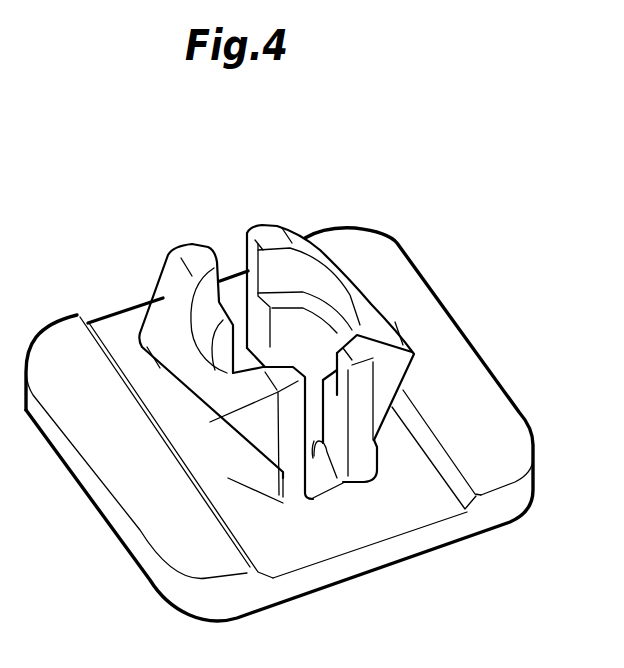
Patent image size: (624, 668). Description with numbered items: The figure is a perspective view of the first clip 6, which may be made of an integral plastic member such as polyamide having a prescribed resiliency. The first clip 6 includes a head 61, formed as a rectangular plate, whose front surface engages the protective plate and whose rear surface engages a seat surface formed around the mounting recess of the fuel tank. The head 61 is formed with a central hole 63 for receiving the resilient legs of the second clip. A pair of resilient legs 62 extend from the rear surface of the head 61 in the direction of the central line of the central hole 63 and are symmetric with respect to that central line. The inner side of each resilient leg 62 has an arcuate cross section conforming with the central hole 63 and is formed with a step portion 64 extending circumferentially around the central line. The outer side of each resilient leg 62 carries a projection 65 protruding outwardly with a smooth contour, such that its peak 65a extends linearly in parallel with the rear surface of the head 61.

The first clip 6 is at (147, 240).
The head 61 is at (92, 508).
The resilient legs 62 is at (262, 224).
The central hole 63 is at (337, 478).
The step portion 64 is at (212, 330).
The projection 65 is at (240, 445).
The peak 65a is at (167, 373).